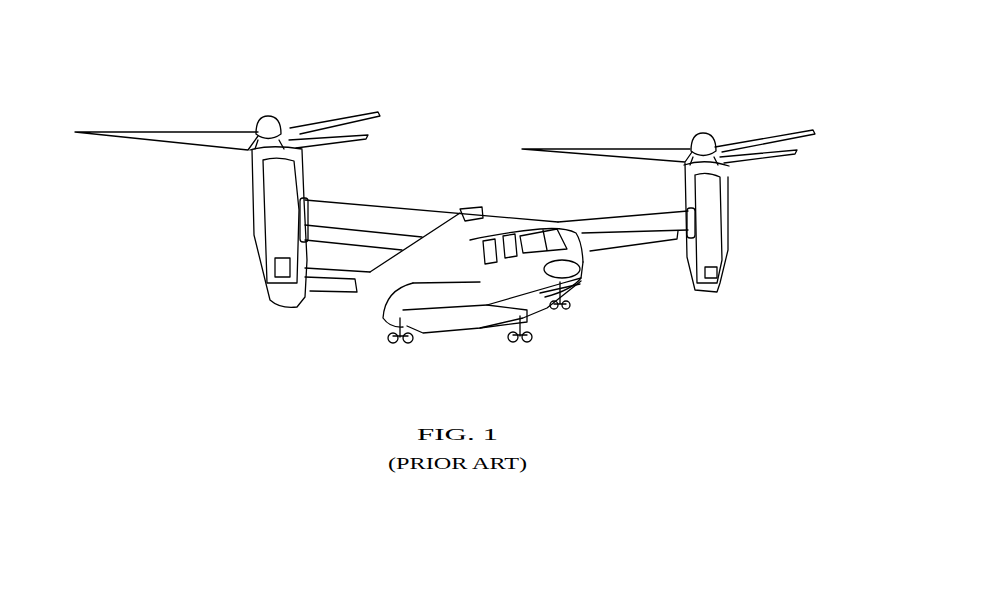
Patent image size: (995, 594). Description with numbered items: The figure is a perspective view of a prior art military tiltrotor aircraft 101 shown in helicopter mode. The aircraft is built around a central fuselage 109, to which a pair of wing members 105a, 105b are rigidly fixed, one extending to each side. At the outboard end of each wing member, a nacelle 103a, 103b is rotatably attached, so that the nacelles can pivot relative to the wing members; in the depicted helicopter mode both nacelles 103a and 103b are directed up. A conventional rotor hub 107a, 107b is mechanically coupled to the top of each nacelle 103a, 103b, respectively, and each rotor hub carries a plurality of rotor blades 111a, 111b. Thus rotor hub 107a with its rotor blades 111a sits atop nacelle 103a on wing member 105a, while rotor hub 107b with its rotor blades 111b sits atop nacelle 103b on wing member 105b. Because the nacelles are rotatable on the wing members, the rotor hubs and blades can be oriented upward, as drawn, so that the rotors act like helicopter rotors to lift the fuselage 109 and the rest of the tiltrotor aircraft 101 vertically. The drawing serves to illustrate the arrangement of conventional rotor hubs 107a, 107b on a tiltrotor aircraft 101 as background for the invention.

The tiltrotor aircraft 101 is at (491, 147).
The nacelle 103a is at (732, 218).
The nacelle 103b is at (252, 193).
The wing member 105a is at (563, 217).
The wing member 105b is at (418, 213).
The rotor hub 107a is at (705, 133).
The rotor hub 107b is at (268, 111).
The fuselage 109 is at (460, 323).
The rotor blades 111a is at (612, 149).
The rotor blades 111b is at (165, 133).